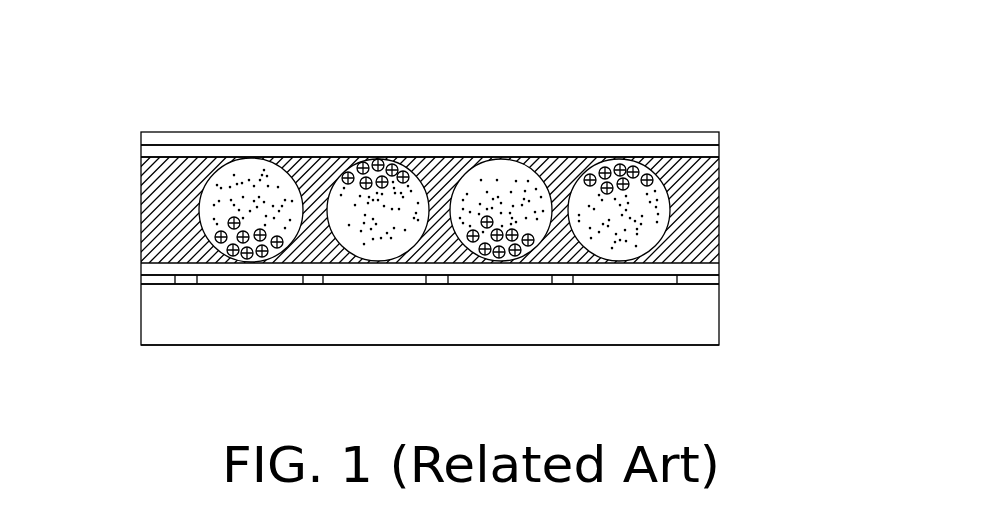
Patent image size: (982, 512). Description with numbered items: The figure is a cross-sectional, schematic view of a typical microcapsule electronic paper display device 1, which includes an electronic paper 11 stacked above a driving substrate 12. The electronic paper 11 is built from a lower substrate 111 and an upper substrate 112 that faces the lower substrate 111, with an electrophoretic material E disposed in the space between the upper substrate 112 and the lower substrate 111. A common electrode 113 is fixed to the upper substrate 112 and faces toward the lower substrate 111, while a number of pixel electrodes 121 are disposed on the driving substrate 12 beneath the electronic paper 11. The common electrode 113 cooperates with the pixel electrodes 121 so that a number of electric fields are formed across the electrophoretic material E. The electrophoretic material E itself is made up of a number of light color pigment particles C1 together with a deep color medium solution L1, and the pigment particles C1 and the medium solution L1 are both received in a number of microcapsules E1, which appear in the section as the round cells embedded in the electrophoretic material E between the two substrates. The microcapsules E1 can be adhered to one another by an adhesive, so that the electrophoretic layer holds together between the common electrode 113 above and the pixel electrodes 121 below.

The microcapsule electronic paper display device 1 is at (171, 29).
The electronic paper 11 is at (133, 132).
The driving substrate 12 is at (133, 278).
The lower substrate 111 is at (683, 267).
The upper substrate 112 is at (475, 140).
The common electrode 113 is at (563, 150).
The pixel electrodes 121 is at (650, 277).
The deep color medium solution L1 is at (230, 181).
The microcapsule E1 is at (288, 173).
The light color pigment particles C1 is at (363, 172).
The electrophoretic material E is at (698, 220).